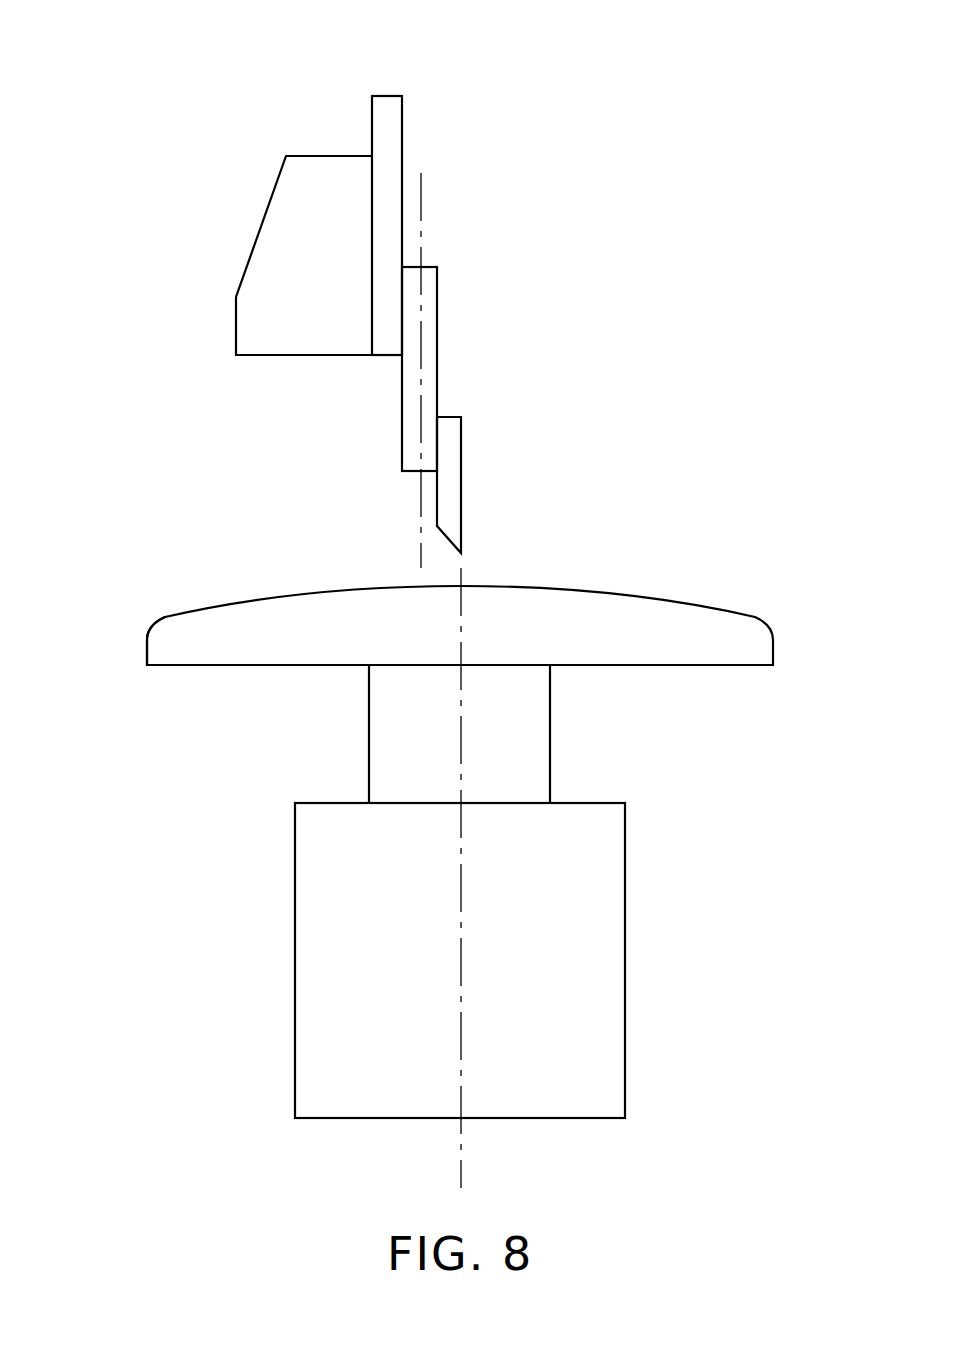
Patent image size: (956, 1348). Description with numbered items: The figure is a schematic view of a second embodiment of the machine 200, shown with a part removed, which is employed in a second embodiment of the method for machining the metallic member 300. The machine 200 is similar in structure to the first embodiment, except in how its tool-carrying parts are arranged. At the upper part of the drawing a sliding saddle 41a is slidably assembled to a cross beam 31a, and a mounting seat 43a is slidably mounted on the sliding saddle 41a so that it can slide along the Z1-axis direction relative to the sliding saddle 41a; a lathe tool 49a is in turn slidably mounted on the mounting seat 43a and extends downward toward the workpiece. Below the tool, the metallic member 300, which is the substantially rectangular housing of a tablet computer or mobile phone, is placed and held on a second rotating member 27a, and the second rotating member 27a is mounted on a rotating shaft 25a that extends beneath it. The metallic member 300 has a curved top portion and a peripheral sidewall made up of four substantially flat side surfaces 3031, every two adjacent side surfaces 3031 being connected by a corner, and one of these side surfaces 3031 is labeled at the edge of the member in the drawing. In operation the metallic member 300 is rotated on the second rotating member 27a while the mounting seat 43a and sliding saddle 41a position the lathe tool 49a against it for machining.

The machine 200 is at (457, 39).
The sliding saddle 41a is at (382, 122).
The cross beam 31a is at (293, 210).
The Z1-axis Z1 is at (441, 370).
The mounting seat 43a is at (413, 427).
The probe tip 49a is at (450, 511).
The metallic member 300 is at (693, 598).
The side surface 3031 is at (147, 646).
The second rotating member 27a is at (395, 746).
The rotating shaft 25a is at (571, 1012).